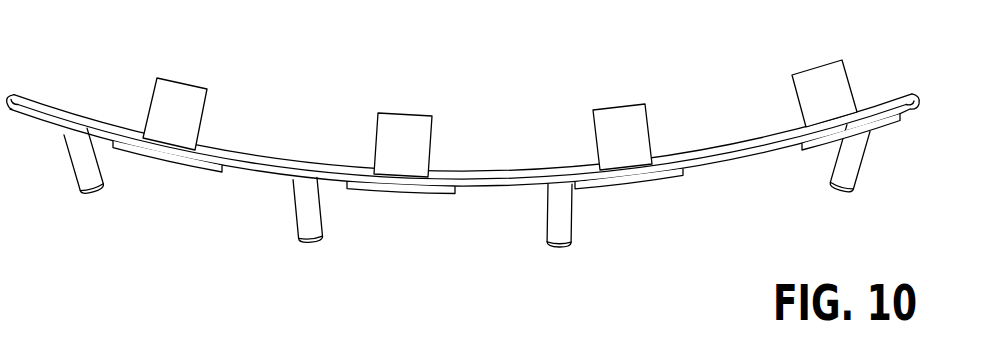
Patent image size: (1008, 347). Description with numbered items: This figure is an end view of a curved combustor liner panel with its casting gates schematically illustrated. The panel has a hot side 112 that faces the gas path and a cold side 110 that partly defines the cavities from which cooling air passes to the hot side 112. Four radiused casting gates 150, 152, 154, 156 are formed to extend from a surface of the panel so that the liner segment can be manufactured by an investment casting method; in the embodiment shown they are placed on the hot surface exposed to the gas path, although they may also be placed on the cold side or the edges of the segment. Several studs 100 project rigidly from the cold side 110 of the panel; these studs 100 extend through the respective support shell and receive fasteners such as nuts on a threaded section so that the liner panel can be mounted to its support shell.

The stud 100 is at (463, 126).
The cold side 110 is at (463, 150).
The hot side 112 is at (728, 143).
The casting gate 150 is at (177, 95).
The casting gate 152 is at (407, 122).
The casting gate 154 is at (620, 115).
The casting gate 156 is at (815, 72).